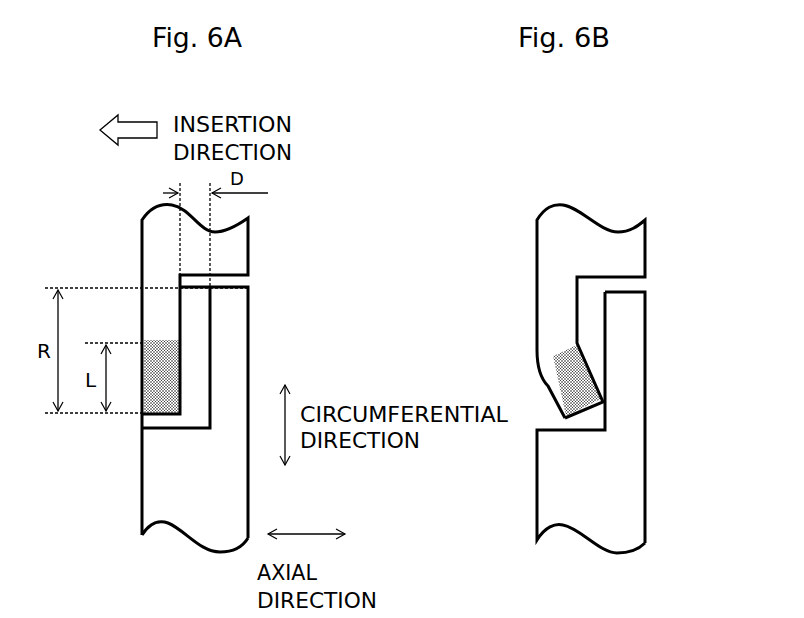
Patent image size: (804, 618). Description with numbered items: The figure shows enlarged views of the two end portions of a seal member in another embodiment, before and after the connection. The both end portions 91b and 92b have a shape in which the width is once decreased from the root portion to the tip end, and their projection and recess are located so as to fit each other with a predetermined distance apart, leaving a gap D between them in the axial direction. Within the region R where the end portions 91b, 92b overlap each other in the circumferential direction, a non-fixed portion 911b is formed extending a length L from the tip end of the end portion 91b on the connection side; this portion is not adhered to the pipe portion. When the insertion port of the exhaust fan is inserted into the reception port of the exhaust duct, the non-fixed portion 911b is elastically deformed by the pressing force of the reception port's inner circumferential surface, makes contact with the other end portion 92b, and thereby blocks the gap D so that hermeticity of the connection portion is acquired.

In FIG. 6A, the end portion 91b is at (126, 245).
In FIG. 6B, the end portion 91b is at (518, 276).
In FIG. 6A, the end portion 92b is at (270, 344).
In FIG. 6B, the end portion 92b is at (659, 364).
In FIG. 6A, the non-fixed portion 911b is at (155, 383).
In FIG. 6B, the non-fixed portion 911b is at (560, 380).